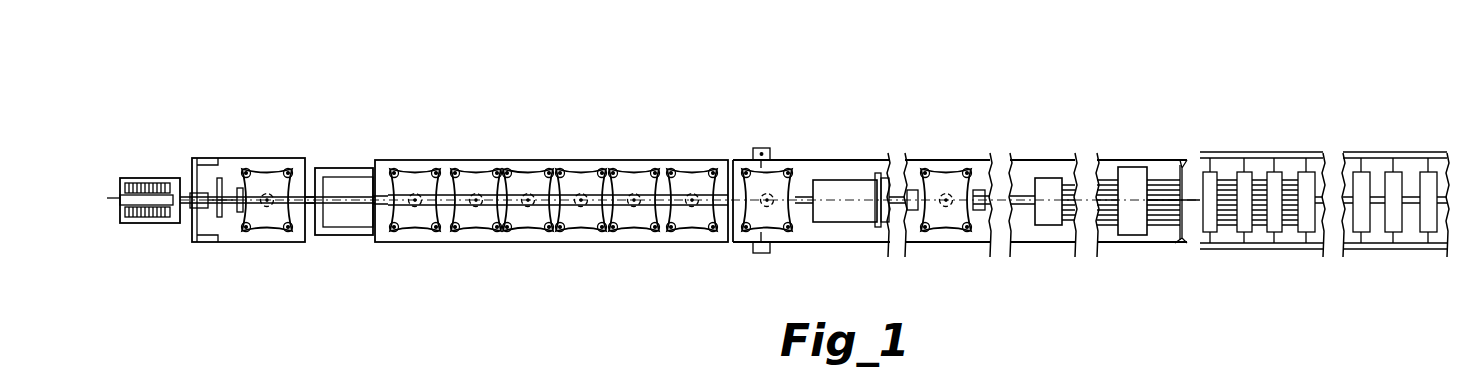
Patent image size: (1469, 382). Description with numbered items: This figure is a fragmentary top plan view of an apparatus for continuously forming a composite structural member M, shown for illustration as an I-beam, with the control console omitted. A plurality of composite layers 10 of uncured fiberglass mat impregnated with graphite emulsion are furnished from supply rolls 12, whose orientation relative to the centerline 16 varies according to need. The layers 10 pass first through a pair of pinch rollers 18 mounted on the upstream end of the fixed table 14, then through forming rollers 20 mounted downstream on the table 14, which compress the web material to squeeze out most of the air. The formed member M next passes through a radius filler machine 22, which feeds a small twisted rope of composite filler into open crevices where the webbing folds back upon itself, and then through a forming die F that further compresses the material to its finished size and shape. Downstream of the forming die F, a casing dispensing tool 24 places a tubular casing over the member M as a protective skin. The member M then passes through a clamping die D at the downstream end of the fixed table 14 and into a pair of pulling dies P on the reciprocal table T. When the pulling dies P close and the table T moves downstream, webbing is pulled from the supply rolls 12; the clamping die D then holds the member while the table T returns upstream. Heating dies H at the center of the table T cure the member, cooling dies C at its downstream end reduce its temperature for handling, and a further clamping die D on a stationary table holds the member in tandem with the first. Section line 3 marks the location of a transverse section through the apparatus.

The structural member M is at (148, 191).
The clamping die D is at (245, 158).
The reciprocal table T is at (392, 156).
The cooling dies C is at (431, 166).
The heating dies H is at (577, 171).
The pulling dies P is at (683, 171).
The forming die F is at (955, 146).
The section line 3- 3 is at (785, 250).
The composite layers 10 is at (1167, 224).
The supply rolls 12 is at (1270, 173).
The table 14 is at (805, 170).
The centerline 16 is at (108, 198).
The pinch rollers 18 is at (1182, 170).
The forming rollers 20 is at (1132, 231).
The radius filler machine 22 is at (1045, 224).
The casing dispensing tool 24 is at (858, 218).